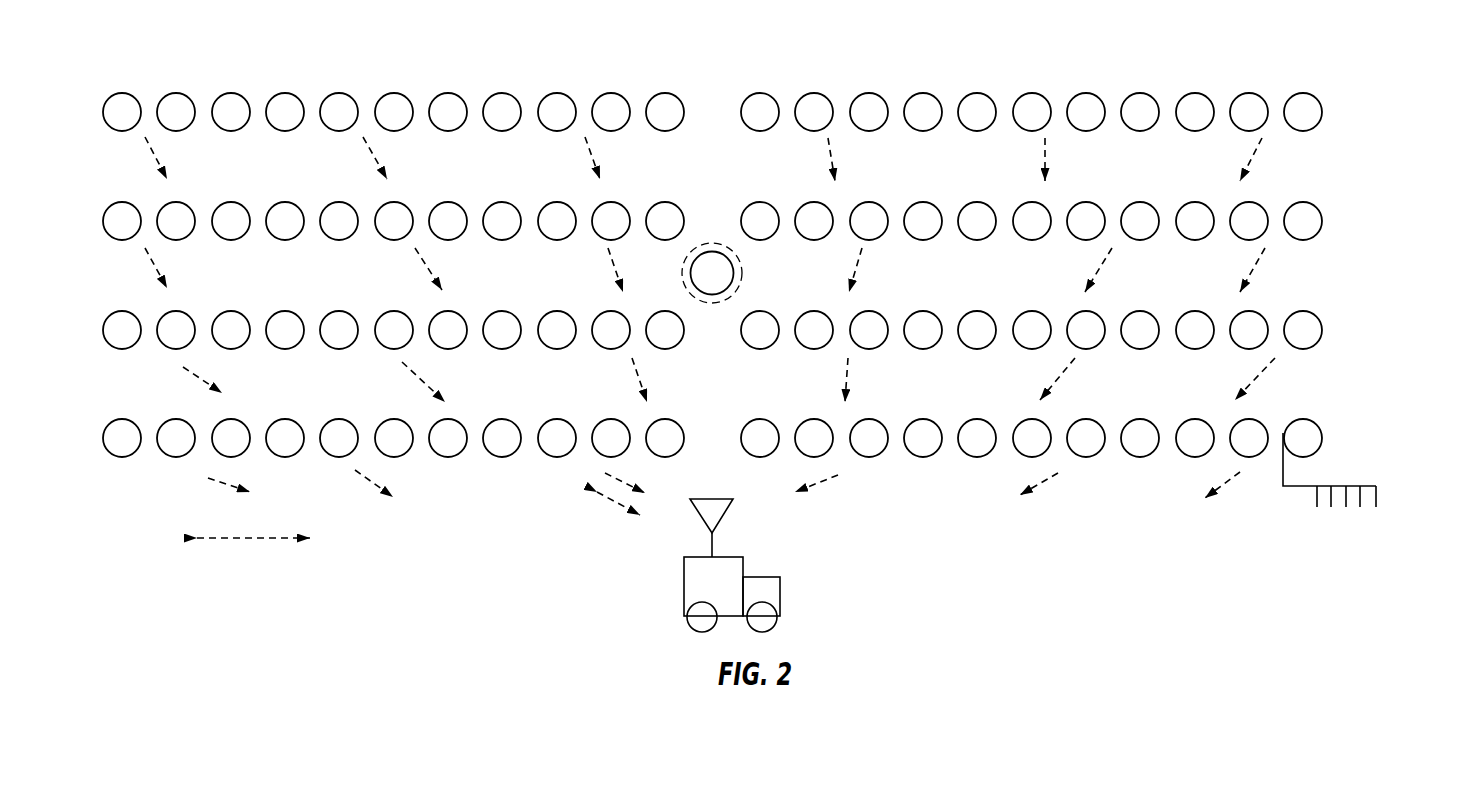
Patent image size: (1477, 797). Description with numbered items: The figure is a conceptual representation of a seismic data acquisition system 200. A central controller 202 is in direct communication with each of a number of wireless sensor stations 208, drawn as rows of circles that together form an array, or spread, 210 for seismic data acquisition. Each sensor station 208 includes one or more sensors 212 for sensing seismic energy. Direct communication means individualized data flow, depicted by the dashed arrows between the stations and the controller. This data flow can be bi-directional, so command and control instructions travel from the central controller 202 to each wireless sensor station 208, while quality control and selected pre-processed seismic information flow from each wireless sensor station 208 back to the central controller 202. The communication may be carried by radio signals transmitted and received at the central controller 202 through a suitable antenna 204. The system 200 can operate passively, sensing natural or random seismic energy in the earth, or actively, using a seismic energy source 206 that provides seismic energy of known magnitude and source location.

The system 200 is at (778, 332).
The central controller 202 is at (771, 565).
The antenna 204 is at (733, 500).
The seismic energy source 206 is at (740, 262).
The wireless sensor station 208 is at (1303, 131).
The array 210 is at (743, 303).
The sensor 212 is at (1376, 507).